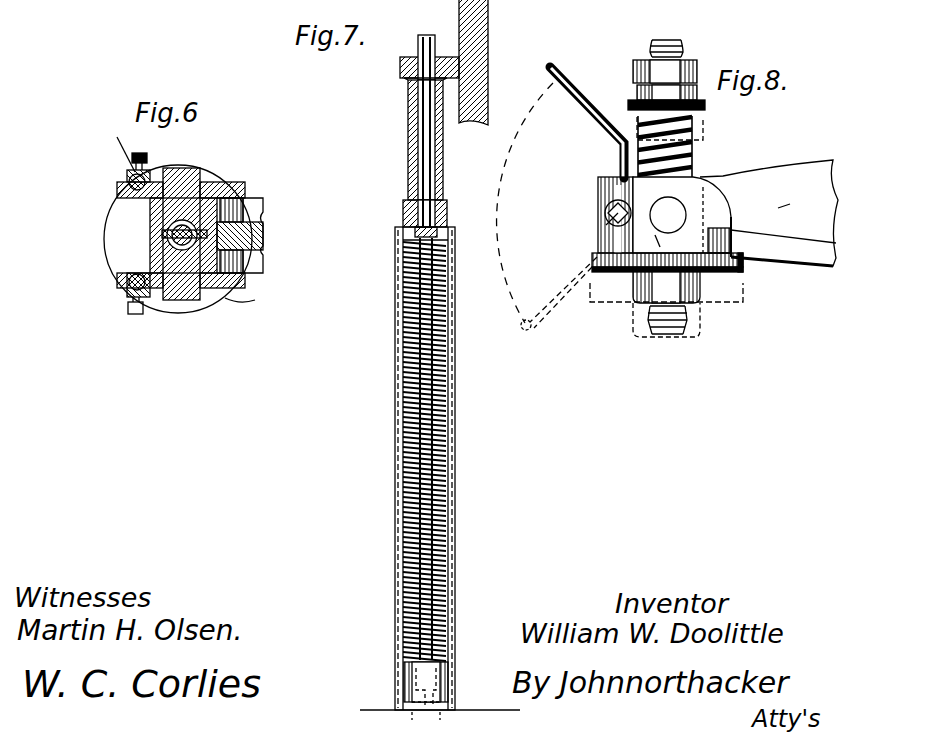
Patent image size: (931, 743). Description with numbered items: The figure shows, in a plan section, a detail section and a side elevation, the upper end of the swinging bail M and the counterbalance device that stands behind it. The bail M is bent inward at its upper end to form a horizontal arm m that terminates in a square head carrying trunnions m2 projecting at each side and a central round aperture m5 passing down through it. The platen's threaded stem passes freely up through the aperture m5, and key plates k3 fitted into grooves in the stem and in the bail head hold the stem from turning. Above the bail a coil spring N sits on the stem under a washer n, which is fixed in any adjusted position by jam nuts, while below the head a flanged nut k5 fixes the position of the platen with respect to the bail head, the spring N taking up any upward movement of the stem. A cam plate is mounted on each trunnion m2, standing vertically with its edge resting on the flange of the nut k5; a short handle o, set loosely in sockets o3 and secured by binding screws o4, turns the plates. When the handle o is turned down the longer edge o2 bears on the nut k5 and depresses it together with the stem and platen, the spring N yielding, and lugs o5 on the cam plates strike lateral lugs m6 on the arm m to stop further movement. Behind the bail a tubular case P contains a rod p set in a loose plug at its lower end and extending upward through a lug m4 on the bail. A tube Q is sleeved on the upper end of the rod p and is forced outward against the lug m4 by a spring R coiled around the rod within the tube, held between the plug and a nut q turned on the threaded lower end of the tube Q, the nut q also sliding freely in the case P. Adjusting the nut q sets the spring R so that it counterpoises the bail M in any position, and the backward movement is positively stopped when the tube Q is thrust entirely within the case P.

In FIG. 6, the bail M is at (253, 210).
In FIG. 7, the bail M is at (488, 38).
In FIG. 8, the bail M is at (769, 213).
In FIG. 8, the arm m is at (770, 212).
In FIG. 6, the trunnions m2 is at (184, 172).
In FIG. 8, the trunnions m2 is at (682, 215).
In FIG. 7, the lug m4 is at (400, 66).
In FIG. 6, the central round aperture m5 is at (150, 200).
In FIG. 8, the lugs m6 is at (731, 243).
In FIG. 8, the nut k is at (634, 82).
In FIG. 6, the key plates k3 is at (162, 233).
In FIG. 6, the flanged nut k5 is at (220, 297).
In FIG. 8, the flanged nut k5 is at (743, 270).
In FIG. 8, the washer n is at (628, 106).
In FIG. 8, the coil spring N is at (697, 160).
In FIG. 8, the handle o is at (583, 108).
In FIG. 6, the edge o2 is at (117, 190).
In FIG. 8, the edge o2 is at (598, 212).
In FIG. 6, the sockets o3 is at (127, 177).
In FIG. 8, the sockets o3 is at (613, 177).
In FIG. 6, the binding screws o4 is at (133, 303).
In FIG. 8, the binding screws o4 is at (606, 225).
In FIG. 8, the lugs o5 is at (772, 212).
In FIG. 7, the tube Q is at (443, 163).
In FIG. 7, the nut q is at (403, 214).
In FIG. 7, the tubular case P is at (455, 464).
In FIG. 7, the rod p is at (452, 518).
In FIG. 7, the spring R is at (452, 412).